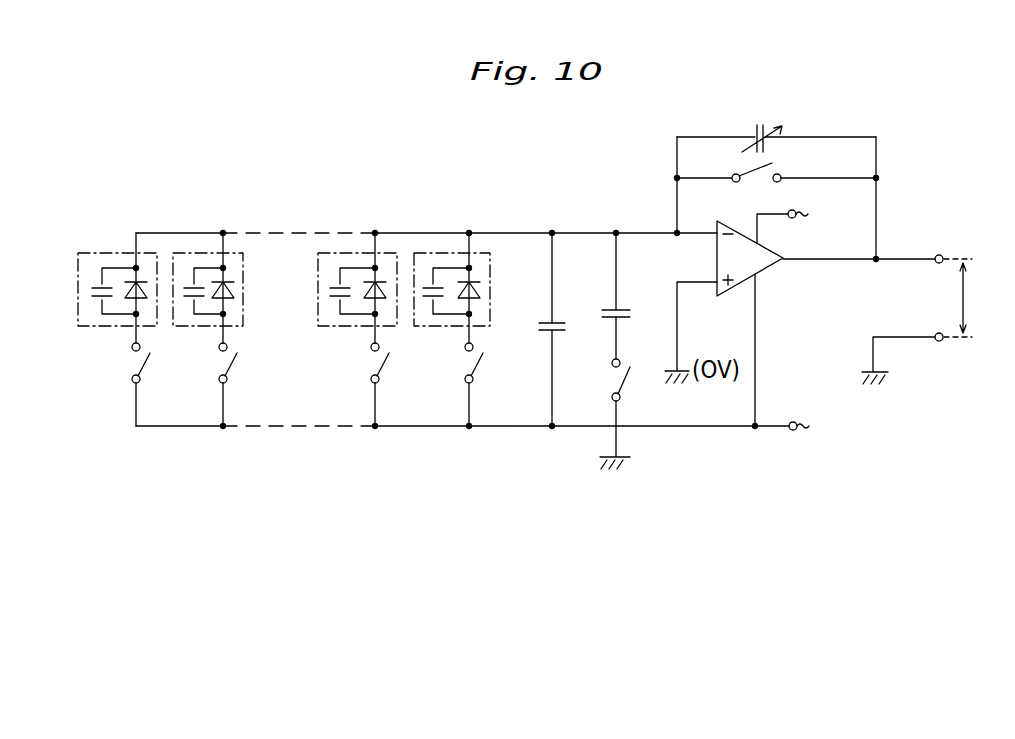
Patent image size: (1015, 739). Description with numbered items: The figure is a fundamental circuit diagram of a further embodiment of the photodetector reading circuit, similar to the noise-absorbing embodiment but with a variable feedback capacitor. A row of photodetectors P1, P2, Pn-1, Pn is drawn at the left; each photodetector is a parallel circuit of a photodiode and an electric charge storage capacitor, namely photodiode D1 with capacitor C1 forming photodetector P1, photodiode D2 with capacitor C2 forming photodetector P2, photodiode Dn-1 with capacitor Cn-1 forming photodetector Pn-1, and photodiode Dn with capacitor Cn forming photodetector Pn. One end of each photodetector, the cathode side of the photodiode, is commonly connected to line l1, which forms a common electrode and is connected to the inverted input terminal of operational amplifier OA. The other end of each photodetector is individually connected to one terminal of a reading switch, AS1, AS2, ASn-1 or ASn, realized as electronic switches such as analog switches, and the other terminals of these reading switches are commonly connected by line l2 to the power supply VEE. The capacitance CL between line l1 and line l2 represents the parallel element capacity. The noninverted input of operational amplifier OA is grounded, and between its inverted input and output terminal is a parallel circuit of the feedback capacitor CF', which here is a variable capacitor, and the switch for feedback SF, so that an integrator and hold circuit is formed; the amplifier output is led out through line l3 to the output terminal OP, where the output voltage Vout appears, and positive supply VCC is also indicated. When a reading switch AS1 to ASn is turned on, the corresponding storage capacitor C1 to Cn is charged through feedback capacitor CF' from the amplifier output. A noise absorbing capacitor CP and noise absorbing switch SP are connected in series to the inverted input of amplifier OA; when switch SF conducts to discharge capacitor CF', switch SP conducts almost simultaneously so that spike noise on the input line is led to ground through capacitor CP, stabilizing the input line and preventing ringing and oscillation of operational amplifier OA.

The electric charge storage capacitor Cn is at (96, 292).
The photodetector Pn is at (123, 275).
The photodiode Dn is at (145, 292).
The reading switch ASn is at (148, 363).
The electric charge storage capacitor Cn-1 is at (190, 292).
The photodetector Pn-1 is at (220, 275).
The photodiode Dn-1 is at (232, 292).
The reading switch ASn-1 is at (235, 363).
The electric charge storage capacitor C2 is at (336, 290).
The photodetector P2 is at (372, 275).
The photodiode D2 is at (384, 292).
The reading switch AS2 is at (388, 363).
The electric charge storage capacitor C1 is at (428, 290).
The photodetector P1 is at (467, 275).
The photodiode D1 is at (478, 292).
The reading switch AS1 is at (482, 363).
The line l1 is at (522, 232).
The line l2 is at (518, 428).
The line l3 is at (906, 258).
The capacitance CL is at (547, 322).
The noise absorbing capacitor CP is at (620, 308).
The noise absorbing switch SP is at (622, 378).
The switch for feedback SF is at (748, 170).
The variable capacitor CF' is at (776, 125).
The operational amplifier OA is at (760, 265).
The positive supply terminal VCC is at (808, 225).
The power supply VEE is at (809, 370).
The output terminal OP is at (944, 256).
The output voltage Vout is at (932, 321).